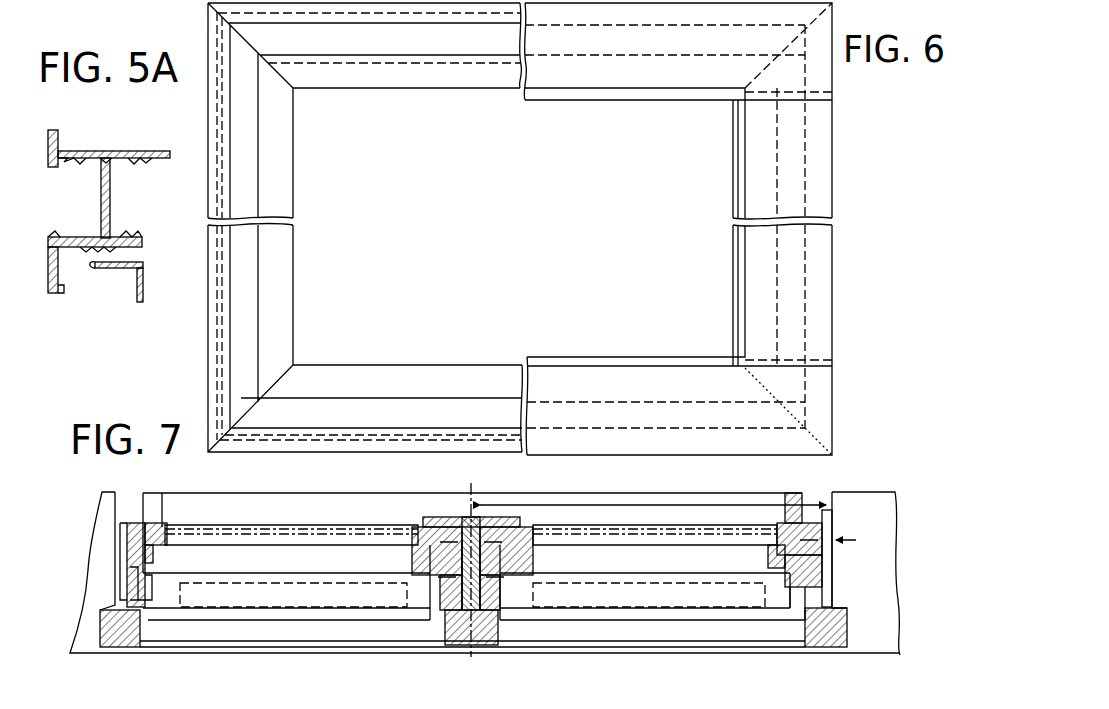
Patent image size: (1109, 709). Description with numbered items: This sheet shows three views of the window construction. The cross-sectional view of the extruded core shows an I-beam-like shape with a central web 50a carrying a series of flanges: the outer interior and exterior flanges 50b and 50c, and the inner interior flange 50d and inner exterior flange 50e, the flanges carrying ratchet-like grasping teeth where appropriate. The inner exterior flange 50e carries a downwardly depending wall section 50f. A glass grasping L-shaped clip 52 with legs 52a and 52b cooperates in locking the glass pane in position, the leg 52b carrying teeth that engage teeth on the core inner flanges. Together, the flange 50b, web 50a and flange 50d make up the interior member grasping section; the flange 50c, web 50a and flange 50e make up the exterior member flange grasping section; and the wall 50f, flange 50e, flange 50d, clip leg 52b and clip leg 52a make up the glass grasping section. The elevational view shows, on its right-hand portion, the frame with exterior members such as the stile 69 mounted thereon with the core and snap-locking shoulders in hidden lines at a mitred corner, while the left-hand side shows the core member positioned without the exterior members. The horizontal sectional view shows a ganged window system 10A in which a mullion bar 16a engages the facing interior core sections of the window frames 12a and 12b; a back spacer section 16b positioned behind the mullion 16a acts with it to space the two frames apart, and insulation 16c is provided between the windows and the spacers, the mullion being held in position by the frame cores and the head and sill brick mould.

In FIG. 5A, the central web 50a is at (111, 203).
In FIG. 5A, the outer interior flange 50b is at (134, 150).
In FIG. 5A, the outer exterior flange 50c is at (60, 150).
In FIG. 5A, the inner interior flange 50d is at (97, 255).
In FIG. 5A, the inner exterior flange 50e is at (70, 250).
In FIG. 5A, the downwardly depending wall section 50f is at (50, 258).
In FIG. 5A, the glass grasping L-shaped clip 52 is at (142, 258).
In FIG. 5A, the clip leg 52a is at (146, 269).
In FIG. 5A, the clip leg 52b is at (122, 278).
In FIG. 6, the stile 69 is at (820, 251).
In FIG. 7, the mounting window assembly 10A is at (88, 518).
In FIG. 7, the mounting frame 12a is at (140, 523).
In FIG. 7, the window frame 12b is at (826, 522).
In FIG. 7, the mullion bar 16a is at (492, 634).
In FIG. 7, the back spacer section 16b is at (466, 518).
In FIG. 7, the insulation 16c is at (466, 563).